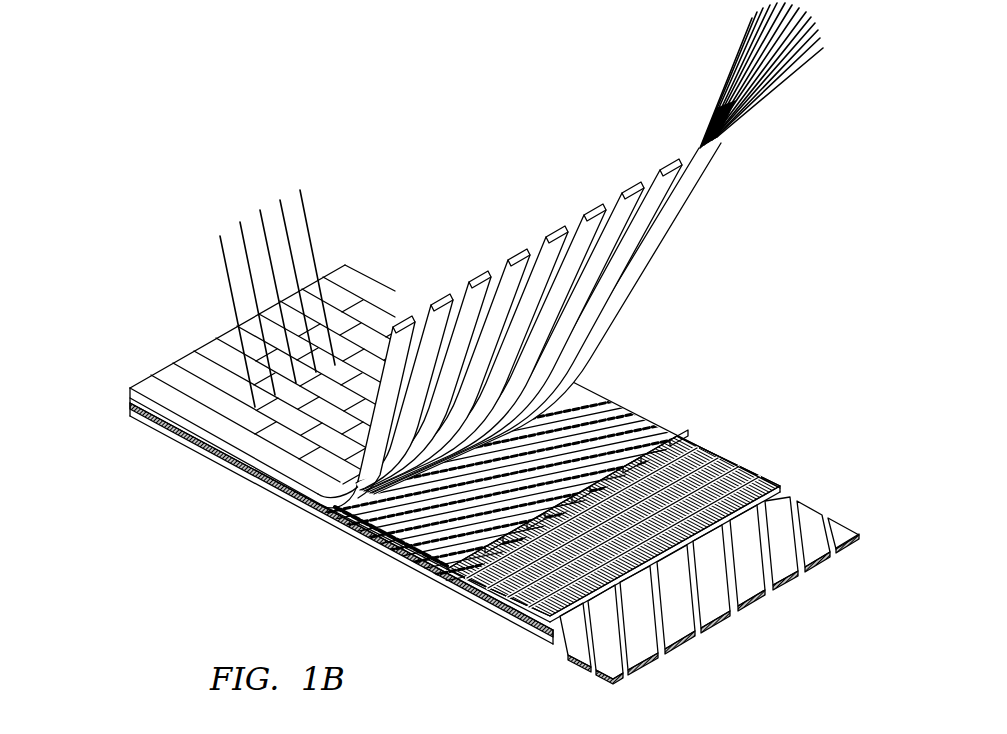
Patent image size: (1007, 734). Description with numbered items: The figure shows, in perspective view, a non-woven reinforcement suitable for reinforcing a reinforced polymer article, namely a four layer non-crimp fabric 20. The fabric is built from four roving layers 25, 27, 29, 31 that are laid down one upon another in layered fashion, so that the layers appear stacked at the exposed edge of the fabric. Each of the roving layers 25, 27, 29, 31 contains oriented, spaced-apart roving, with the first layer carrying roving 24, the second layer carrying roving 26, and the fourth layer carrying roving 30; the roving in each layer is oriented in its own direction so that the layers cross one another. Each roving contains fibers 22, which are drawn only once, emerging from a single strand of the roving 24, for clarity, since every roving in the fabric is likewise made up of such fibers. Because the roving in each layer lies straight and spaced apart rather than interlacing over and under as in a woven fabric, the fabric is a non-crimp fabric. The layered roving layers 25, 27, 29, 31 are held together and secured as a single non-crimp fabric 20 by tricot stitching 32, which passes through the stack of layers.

The four layer non-crimp fabric 20 is at (459, 206).
The fibers 22 is at (733, 72).
The roving 24 is at (680, 205).
The roving layer 25 is at (130, 389).
The roving 26 is at (452, 535).
The roving layer 27 is at (130, 400).
The roving layer 29 is at (130, 406).
The roving 30 is at (803, 527).
The roving layer 31 is at (130, 412).
The tricot stitching 32 is at (368, 337).